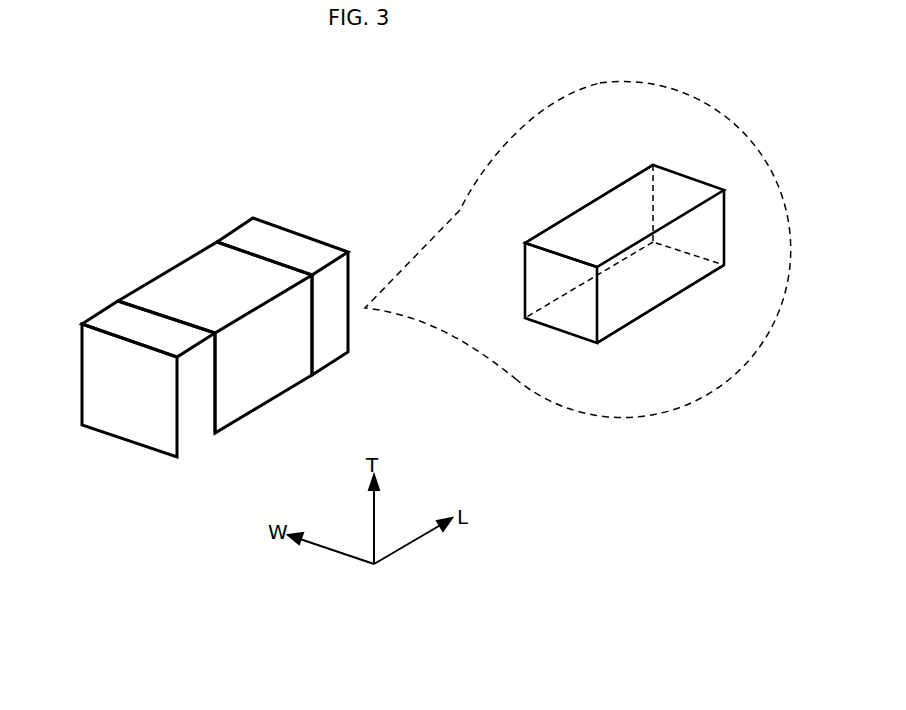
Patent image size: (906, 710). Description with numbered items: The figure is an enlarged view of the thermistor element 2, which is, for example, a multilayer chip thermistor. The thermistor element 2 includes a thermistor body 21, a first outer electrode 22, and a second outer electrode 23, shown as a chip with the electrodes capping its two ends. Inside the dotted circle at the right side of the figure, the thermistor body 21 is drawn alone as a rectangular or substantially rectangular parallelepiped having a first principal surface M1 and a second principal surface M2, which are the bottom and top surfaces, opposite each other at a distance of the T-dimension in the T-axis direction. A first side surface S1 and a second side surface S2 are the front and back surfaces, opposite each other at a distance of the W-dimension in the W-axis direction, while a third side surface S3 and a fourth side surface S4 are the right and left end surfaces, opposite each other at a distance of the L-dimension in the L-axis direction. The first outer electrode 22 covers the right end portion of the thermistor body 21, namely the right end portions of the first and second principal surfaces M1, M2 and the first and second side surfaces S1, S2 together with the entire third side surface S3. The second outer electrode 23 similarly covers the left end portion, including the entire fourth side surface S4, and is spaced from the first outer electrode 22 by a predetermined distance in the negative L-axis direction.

The thermistor element 2 is at (52, 166).
The thermistor body 21 is at (166, 295).
The first outer electrode 22 is at (248, 248).
The second outer electrode 23 is at (115, 327).
The first side surface S1 is at (682, 268).
The second side surface S2 is at (598, 212).
The third side surface S3 is at (690, 193).
The fourth side surface S4 is at (560, 315).
The first principal surface M1 is at (638, 310).
The second principal surface M2 is at (567, 225).